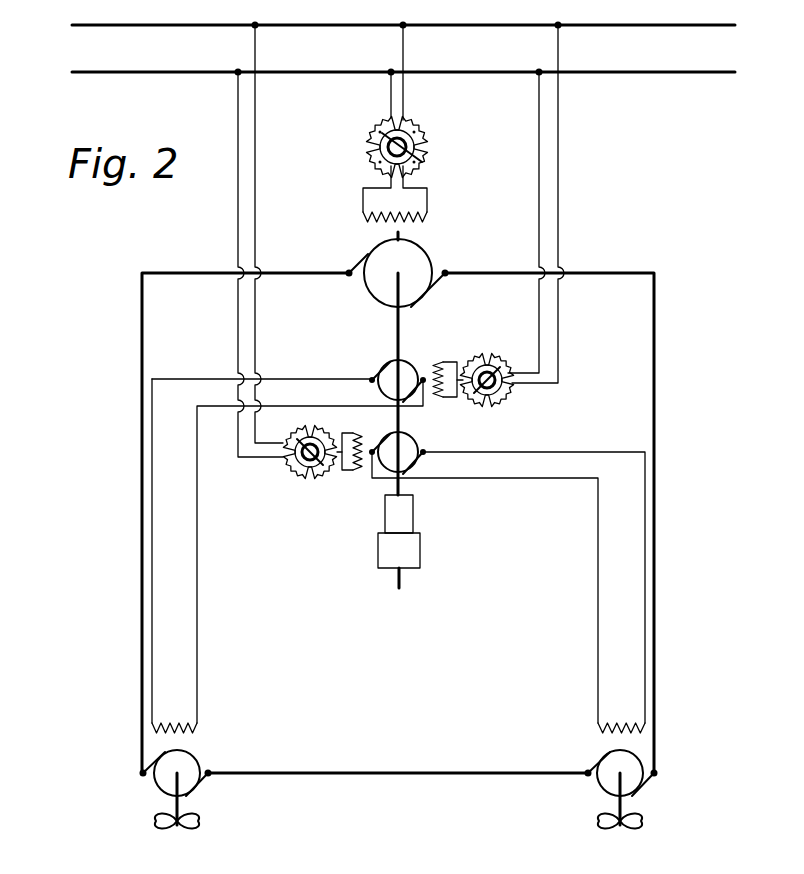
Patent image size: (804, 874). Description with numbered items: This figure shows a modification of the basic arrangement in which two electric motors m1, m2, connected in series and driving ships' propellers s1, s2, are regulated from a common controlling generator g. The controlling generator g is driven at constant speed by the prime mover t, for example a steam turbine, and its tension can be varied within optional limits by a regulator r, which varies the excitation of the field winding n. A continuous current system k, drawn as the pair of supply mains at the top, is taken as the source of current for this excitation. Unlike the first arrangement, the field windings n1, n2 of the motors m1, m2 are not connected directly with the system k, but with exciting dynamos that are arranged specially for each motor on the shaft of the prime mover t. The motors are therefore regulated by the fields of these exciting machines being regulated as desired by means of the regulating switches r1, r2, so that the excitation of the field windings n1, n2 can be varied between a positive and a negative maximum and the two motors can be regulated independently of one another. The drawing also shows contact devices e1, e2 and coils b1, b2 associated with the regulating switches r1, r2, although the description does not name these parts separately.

The continuous current system k is at (403, 49).
The regulating device r is at (430, 153).
The field winding n is at (430, 204).
The controlling generator g is at (441, 247).
The first contact e1 is at (400, 350).
The first relay coil b1 is at (448, 356).
The regulating switch r1 is at (488, 345).
The second contact e2 is at (424, 446).
The second relay coil b2 is at (364, 472).
The regulating switch r2 is at (292, 484).
The prime mover t is at (424, 545).
The field winding n1 is at (193, 725).
The motor m1 is at (218, 762).
The ship's propeller s1 is at (193, 803).
The field winding n2 is at (596, 728).
The motor m2 is at (584, 767).
The ship's propeller s2 is at (603, 803).